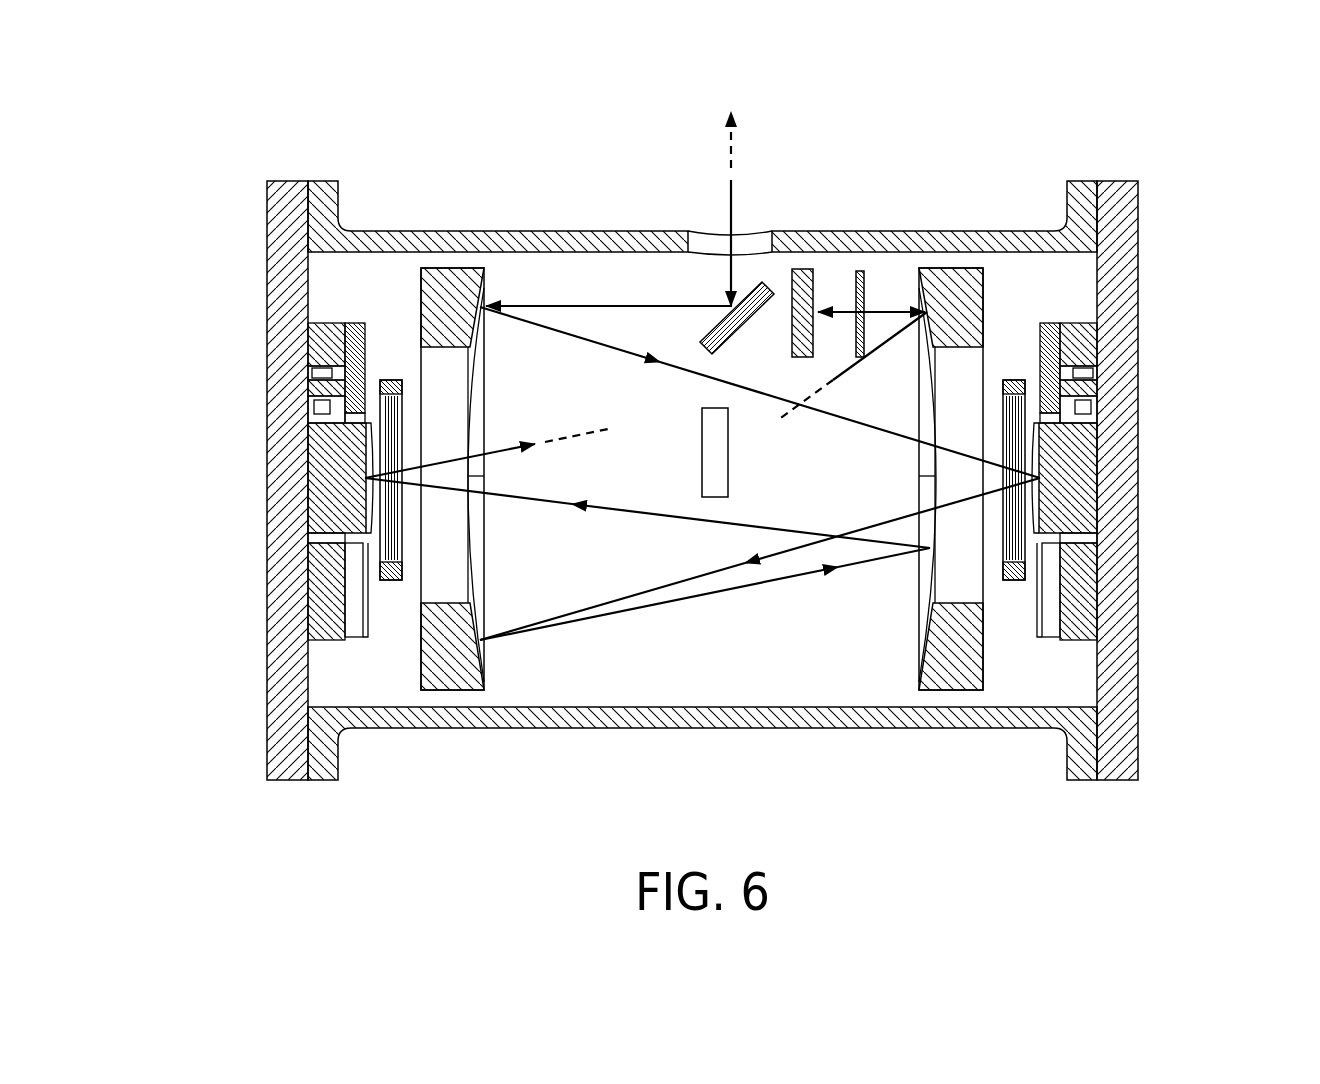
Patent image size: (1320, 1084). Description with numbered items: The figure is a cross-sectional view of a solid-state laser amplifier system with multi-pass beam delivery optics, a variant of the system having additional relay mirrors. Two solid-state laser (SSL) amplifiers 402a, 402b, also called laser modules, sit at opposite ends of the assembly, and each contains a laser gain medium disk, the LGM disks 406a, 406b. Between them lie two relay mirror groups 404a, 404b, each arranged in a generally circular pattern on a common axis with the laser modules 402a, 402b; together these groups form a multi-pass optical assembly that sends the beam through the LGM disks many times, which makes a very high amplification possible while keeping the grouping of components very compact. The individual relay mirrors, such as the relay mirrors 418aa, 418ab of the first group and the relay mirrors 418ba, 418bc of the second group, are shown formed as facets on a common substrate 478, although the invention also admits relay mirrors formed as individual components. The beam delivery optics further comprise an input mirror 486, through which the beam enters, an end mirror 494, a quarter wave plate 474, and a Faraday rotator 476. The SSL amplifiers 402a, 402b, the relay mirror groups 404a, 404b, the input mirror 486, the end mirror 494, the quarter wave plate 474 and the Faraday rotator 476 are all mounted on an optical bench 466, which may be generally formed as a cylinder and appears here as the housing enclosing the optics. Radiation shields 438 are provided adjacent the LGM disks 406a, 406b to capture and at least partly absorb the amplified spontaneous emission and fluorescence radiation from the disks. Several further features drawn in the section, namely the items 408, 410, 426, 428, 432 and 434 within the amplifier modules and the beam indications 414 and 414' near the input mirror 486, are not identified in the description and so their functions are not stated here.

The solid-state laser amplifier 402a is at (279, 176).
The solid-state laser amplifier 402b is at (1132, 180).
The relay mirror group 404a is at (464, 266).
The relay mirror group 404b is at (972, 266).
The LGM disk 406a is at (360, 518).
The LGM disk 406b is at (1047, 518).
The window 408 is at (362, 470).
The spacer 410 is at (367, 450).
The incoming light beam 414 is at (685, 243).
The outgoing light beam 414' is at (780, 135).
The relay mirror 418aa is at (483, 330).
The relay mirror 418ab is at (487, 660).
The relay mirror 418ba is at (918, 318).
The fourth lens surface 418bc is at (912, 563).
The housing wall 426 is at (267, 275).
The retainer 428 is at (312, 652).
The mount block 432 is at (305, 482).
The mounting ring 434 is at (306, 588).
The radiation shield 438 is at (392, 583).
The optical bench 466 is at (510, 728).
The quarter wave plate 474 is at (860, 270).
The Faraday rotator 476 is at (718, 497).
The common substrate 478 is at (440, 692).
The input mirror 486 is at (716, 318).
The end mirror 494 is at (805, 270).